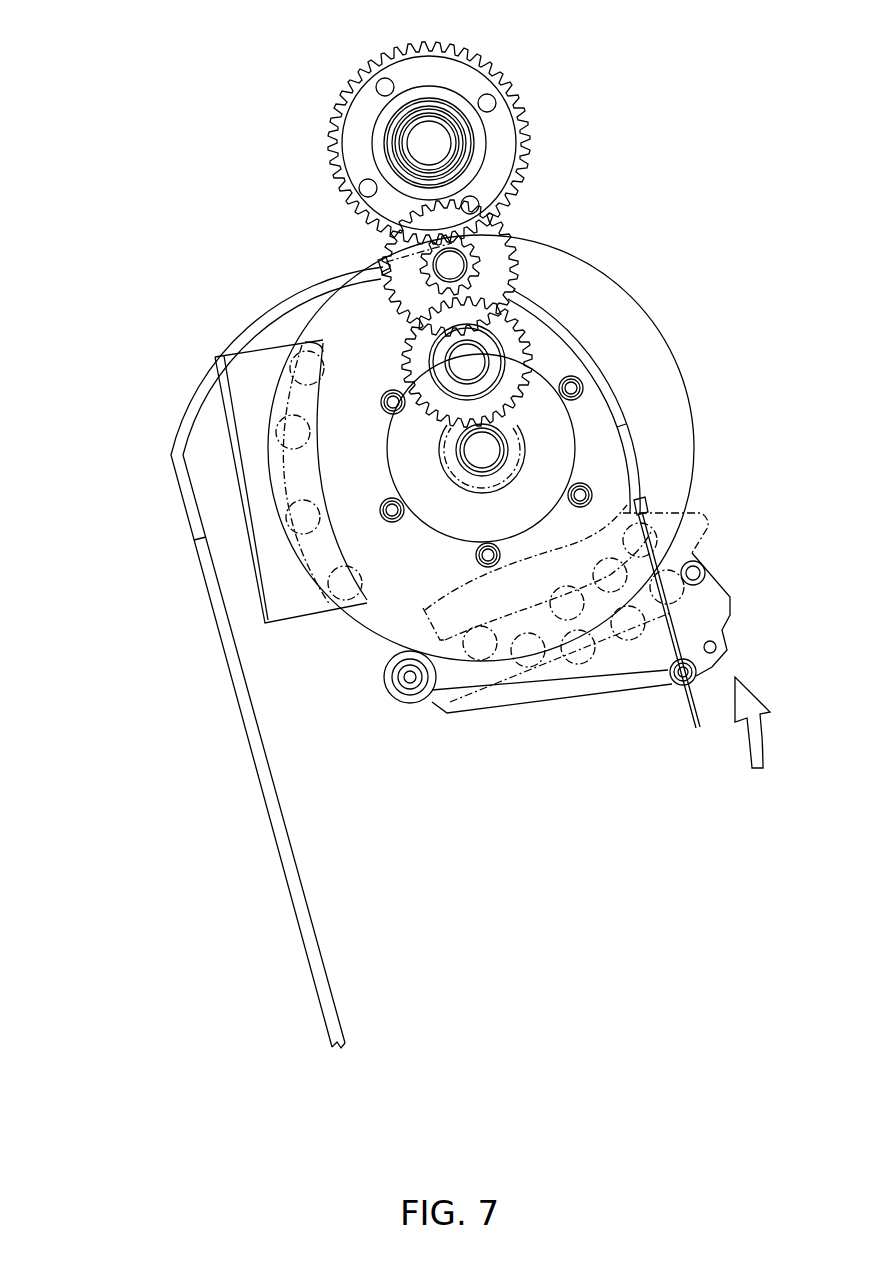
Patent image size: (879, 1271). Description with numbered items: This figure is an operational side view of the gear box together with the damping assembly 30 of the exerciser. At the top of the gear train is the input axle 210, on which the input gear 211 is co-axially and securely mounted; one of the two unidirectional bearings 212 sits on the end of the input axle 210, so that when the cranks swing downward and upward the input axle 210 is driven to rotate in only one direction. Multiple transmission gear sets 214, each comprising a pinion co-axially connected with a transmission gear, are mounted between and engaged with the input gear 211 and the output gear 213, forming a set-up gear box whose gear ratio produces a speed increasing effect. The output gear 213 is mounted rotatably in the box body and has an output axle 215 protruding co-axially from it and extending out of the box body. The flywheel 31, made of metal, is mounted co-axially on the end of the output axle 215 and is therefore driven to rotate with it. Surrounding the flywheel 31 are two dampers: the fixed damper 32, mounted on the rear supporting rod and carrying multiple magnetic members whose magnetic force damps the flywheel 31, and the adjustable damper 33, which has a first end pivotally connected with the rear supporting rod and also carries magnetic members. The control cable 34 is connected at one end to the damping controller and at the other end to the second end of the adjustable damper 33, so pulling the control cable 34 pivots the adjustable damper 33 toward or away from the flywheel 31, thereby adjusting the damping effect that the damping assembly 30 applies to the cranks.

The damping assembly 30 is at (222, 831).
The flywheel 31 is at (337, 338).
The fixed damper 32 is at (258, 472).
The adjustable damper 33 is at (619, 668).
The control cable 34 is at (245, 702).
The input axle 210 is at (396, 126).
The input gear 211 is at (413, 70).
The unidirectional bearings 212 is at (385, 140).
The output gear 213 is at (503, 438).
The transmission gear sets 214 is at (392, 250).
The output axle 215 is at (488, 457).